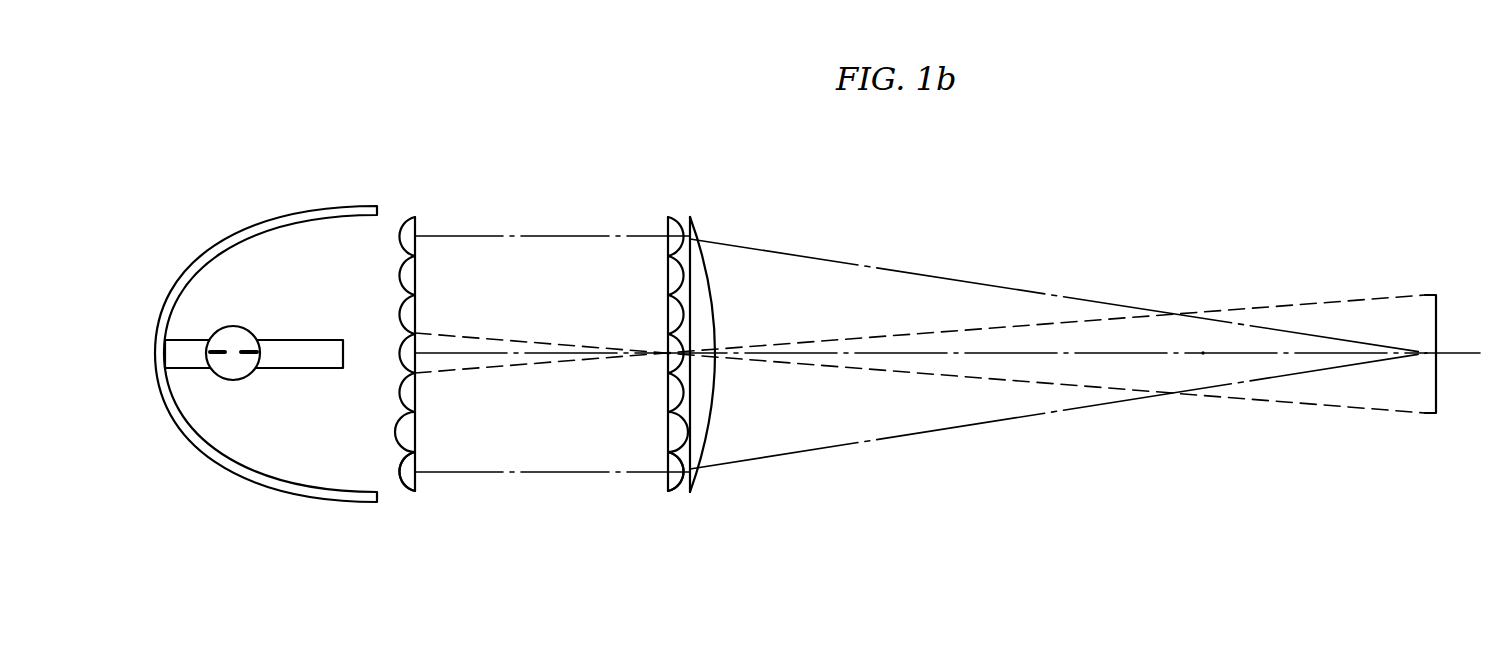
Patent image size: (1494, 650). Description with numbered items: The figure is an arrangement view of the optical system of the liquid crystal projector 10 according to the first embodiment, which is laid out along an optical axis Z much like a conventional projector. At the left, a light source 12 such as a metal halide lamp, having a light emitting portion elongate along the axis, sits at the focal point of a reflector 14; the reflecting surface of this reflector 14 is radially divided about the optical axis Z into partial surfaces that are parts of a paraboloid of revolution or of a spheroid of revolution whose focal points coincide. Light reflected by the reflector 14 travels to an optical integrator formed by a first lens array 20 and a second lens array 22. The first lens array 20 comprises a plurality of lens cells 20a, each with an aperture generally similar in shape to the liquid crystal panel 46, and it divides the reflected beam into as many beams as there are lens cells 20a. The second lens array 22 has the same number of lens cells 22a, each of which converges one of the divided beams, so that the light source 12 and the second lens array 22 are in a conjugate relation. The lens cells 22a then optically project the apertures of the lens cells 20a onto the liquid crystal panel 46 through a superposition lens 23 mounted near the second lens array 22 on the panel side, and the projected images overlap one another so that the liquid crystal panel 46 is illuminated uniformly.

The liquid crystal projector 10 is at (1130, 87).
The light source 12 is at (223, 358).
The reflector 14 is at (268, 226).
The first lens array 20 is at (417, 216).
The lens cells 20a is at (413, 490).
The second lens array 22 is at (668, 216).
The lens cells 22a is at (674, 481).
The superposition lens 23 is at (700, 238).
The liquid crystal panel 46 is at (1436, 294).
The optical axis Z is at (1203, 353).